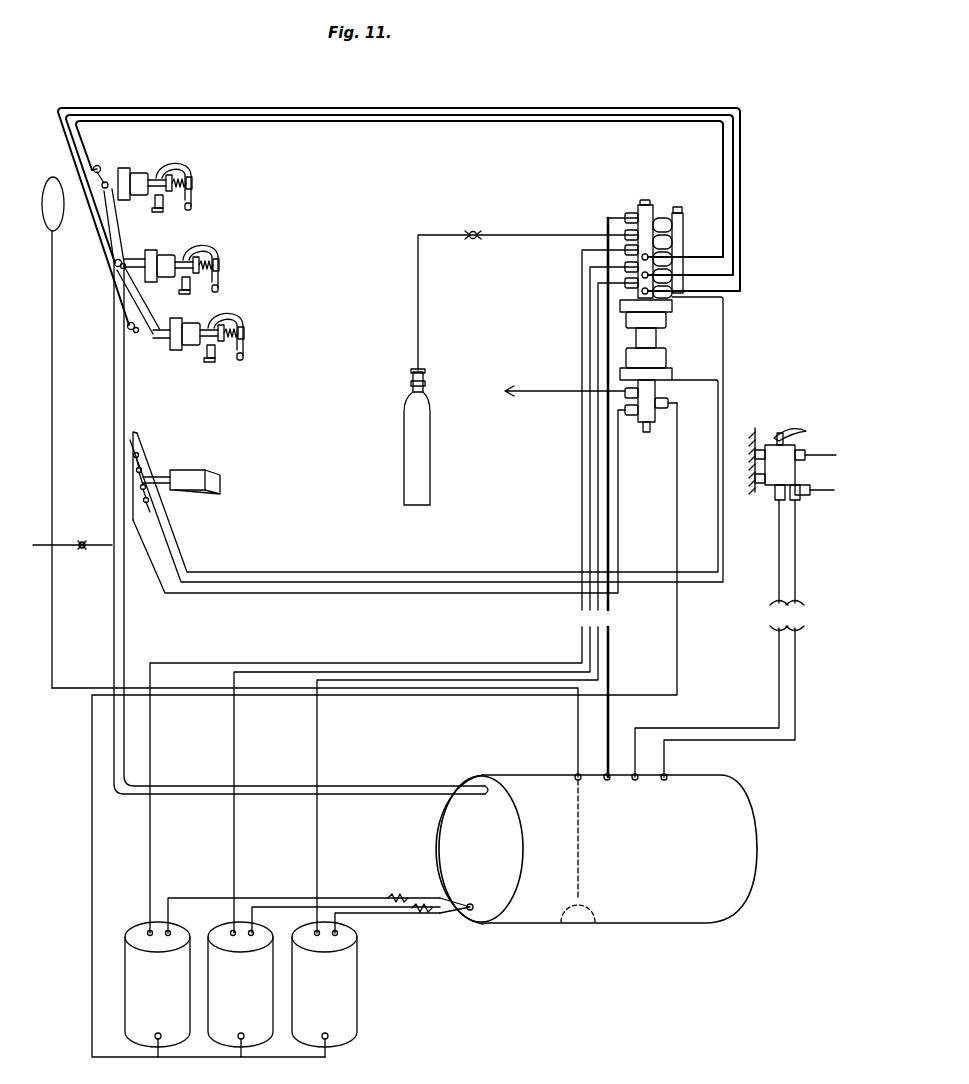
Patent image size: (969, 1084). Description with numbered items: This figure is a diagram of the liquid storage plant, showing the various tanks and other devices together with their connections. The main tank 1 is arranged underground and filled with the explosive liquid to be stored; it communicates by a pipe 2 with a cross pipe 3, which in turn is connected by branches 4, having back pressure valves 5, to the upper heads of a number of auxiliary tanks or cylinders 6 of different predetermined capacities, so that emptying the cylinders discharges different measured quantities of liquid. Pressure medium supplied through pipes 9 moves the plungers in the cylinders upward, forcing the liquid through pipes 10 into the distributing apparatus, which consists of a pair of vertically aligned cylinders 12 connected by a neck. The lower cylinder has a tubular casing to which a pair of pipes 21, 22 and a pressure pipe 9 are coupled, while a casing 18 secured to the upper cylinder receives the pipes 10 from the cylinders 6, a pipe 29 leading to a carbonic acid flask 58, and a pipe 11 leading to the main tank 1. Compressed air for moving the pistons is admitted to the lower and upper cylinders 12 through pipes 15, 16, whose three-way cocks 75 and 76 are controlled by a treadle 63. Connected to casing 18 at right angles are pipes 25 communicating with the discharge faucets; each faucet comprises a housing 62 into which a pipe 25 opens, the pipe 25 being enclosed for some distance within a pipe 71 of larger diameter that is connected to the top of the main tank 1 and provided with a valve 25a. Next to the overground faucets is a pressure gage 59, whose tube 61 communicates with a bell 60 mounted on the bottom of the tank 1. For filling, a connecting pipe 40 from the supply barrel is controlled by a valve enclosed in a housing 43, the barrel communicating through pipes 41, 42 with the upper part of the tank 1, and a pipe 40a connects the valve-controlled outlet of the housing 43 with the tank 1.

The main tank 1 is at (742, 840).
The pipe 2 is at (462, 916).
The cross pipe 3 is at (424, 897).
The branches 4 is at (288, 898).
The back pressure valves 5 is at (419, 915).
The auxiliary tanks or cylinders 6 is at (305, 980).
The pressure pipes 9 is at (646, 694).
The pipes 10 is at (590, 484).
The pipe 11 is at (608, 510).
The cylinders 12 is at (659, 355).
The pipe 15 is at (700, 382).
The pipe 16 is at (276, 578).
The casing 18 is at (653, 208).
The pipe 21 is at (618, 460).
The pipe 22 is at (566, 384).
The pipes 25 is at (82, 123).
The valve 25a is at (106, 165).
The pipe 29 is at (449, 238).
The connecting pipe 40 is at (812, 454).
The pipe 40a is at (771, 608).
The pipe 41 is at (817, 491).
The pipe 42 is at (800, 636).
The housing 43 is at (777, 470).
The carbonic acid flask 58 is at (410, 437).
The pressure gage 59 is at (64, 220).
The bell 60 is at (596, 905).
The tube 61 is at (68, 688).
The housing 62 is at (146, 163).
The treadle 63 is at (199, 472).
The pipe 71 is at (122, 228).
The three-way cock 75 is at (131, 466).
The three-way cock 76 is at (150, 490).